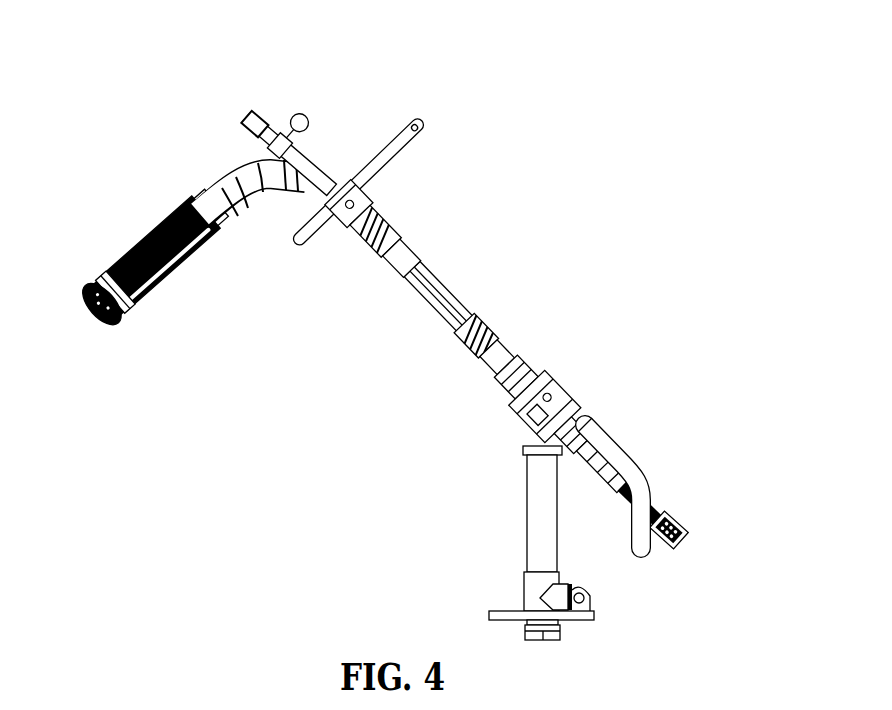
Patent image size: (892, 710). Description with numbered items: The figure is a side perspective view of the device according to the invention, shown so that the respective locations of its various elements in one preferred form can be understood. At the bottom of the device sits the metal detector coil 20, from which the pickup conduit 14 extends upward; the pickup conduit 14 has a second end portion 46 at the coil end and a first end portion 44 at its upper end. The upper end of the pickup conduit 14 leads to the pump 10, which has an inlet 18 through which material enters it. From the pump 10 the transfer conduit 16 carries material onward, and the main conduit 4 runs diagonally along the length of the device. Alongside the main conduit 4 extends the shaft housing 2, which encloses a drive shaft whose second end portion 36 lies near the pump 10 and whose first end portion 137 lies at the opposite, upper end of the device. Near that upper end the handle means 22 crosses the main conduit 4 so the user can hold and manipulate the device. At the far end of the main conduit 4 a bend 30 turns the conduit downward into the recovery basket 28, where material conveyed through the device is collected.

The shaft housing 2 is at (413, 286).
The main conduit 4 is at (443, 288).
The pump 10 is at (598, 426).
The pickup conduit 14 is at (540, 522).
The transfer conduit 16 is at (612, 452).
The inlet of the pump 18 is at (678, 518).
The metal detector coil 20 is at (500, 611).
The handle means 22 is at (407, 159).
The recovery basket 28 is at (140, 238).
The bend 30 is at (238, 164).
The second end portion of the drive shaft 36 is at (551, 383).
The first end portion of the pickup conduit 44 is at (523, 452).
The second end portion of the pickup conduit 46 is at (562, 633).
The first end portion of the drive shaft 137 is at (250, 118).